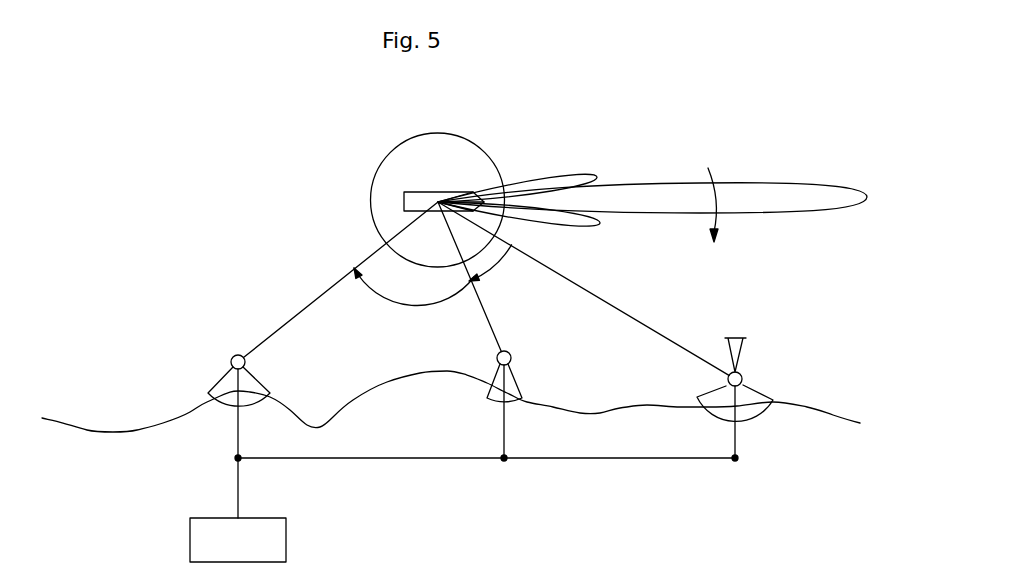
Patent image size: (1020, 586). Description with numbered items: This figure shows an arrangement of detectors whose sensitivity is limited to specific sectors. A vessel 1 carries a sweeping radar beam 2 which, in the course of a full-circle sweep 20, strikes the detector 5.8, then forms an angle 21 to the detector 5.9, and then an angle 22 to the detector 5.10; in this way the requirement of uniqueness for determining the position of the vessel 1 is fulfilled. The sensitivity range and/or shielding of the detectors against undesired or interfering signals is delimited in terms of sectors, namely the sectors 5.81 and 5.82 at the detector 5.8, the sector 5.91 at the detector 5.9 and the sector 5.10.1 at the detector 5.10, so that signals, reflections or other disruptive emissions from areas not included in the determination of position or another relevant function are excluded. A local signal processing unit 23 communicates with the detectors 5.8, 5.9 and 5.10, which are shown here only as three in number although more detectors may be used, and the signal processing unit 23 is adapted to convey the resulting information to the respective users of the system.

The vessel 1 is at (423, 192).
The sweeping radar beam 2 is at (767, 198).
The 360 degrees sweep 20 is at (377, 230).
The angle 21 is at (499, 261).
The angle 22 is at (433, 304).
The detector 5.8 is at (755, 414).
The detector 5.9 is at (525, 404).
The detector 5.10 is at (267, 435).
The sector 5.81 is at (746, 350).
The sector 5.82 is at (753, 422).
The sector 5.91 is at (512, 403).
The sector 5.10.1 is at (248, 405).
The local signal processing unit 23 is at (202, 540).